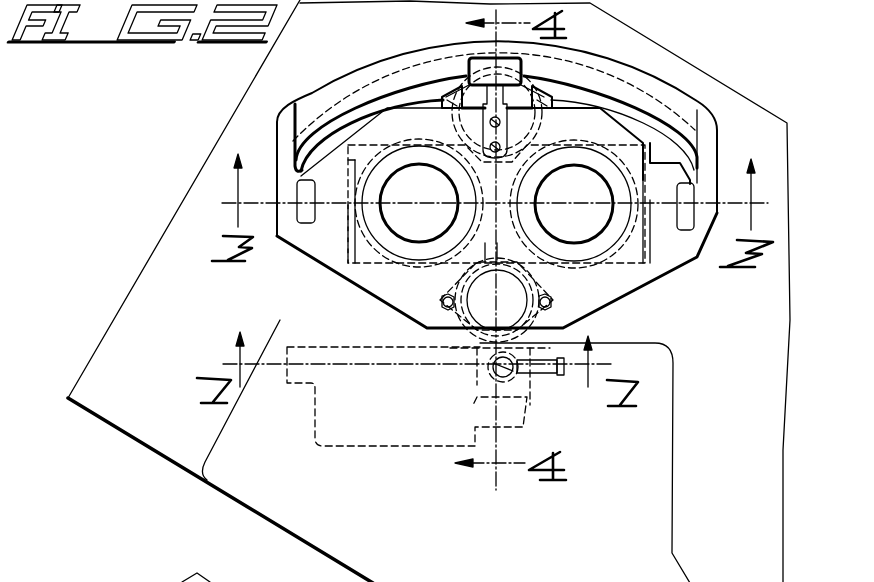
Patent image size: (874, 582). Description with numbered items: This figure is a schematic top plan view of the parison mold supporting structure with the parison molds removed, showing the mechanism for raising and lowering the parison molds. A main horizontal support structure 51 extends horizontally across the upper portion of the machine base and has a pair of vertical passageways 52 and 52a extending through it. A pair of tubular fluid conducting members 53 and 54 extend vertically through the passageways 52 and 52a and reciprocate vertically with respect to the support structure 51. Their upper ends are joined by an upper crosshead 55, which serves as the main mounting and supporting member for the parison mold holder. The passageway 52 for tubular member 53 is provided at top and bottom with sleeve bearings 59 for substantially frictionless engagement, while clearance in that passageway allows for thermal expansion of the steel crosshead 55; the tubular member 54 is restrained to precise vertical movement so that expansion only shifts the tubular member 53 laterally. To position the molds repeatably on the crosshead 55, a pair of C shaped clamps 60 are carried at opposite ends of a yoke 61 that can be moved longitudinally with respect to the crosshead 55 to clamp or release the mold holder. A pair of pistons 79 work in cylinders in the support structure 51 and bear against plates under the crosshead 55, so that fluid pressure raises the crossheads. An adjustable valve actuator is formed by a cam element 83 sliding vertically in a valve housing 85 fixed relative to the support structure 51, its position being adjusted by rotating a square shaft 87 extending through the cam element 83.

The main horizontal support structure 51 is at (258, 100).
The vertical passageway 52 is at (380, 228).
The vertical passageway 52a is at (600, 262).
The tubular fluid conducting member 53 is at (463, 184).
The tubular fluid conducting member 54 is at (521, 192).
The upper crosshead 55 is at (357, 274).
The sleeve bearing 59 is at (375, 168).
The C shaped clamp 60 is at (307, 210).
The yoke 61 is at (456, 28).
The piston 79 is at (553, 77).
The cam element 83 is at (480, 373).
The valve housing 85 is at (327, 425).
The square shaft 87 is at (513, 370).